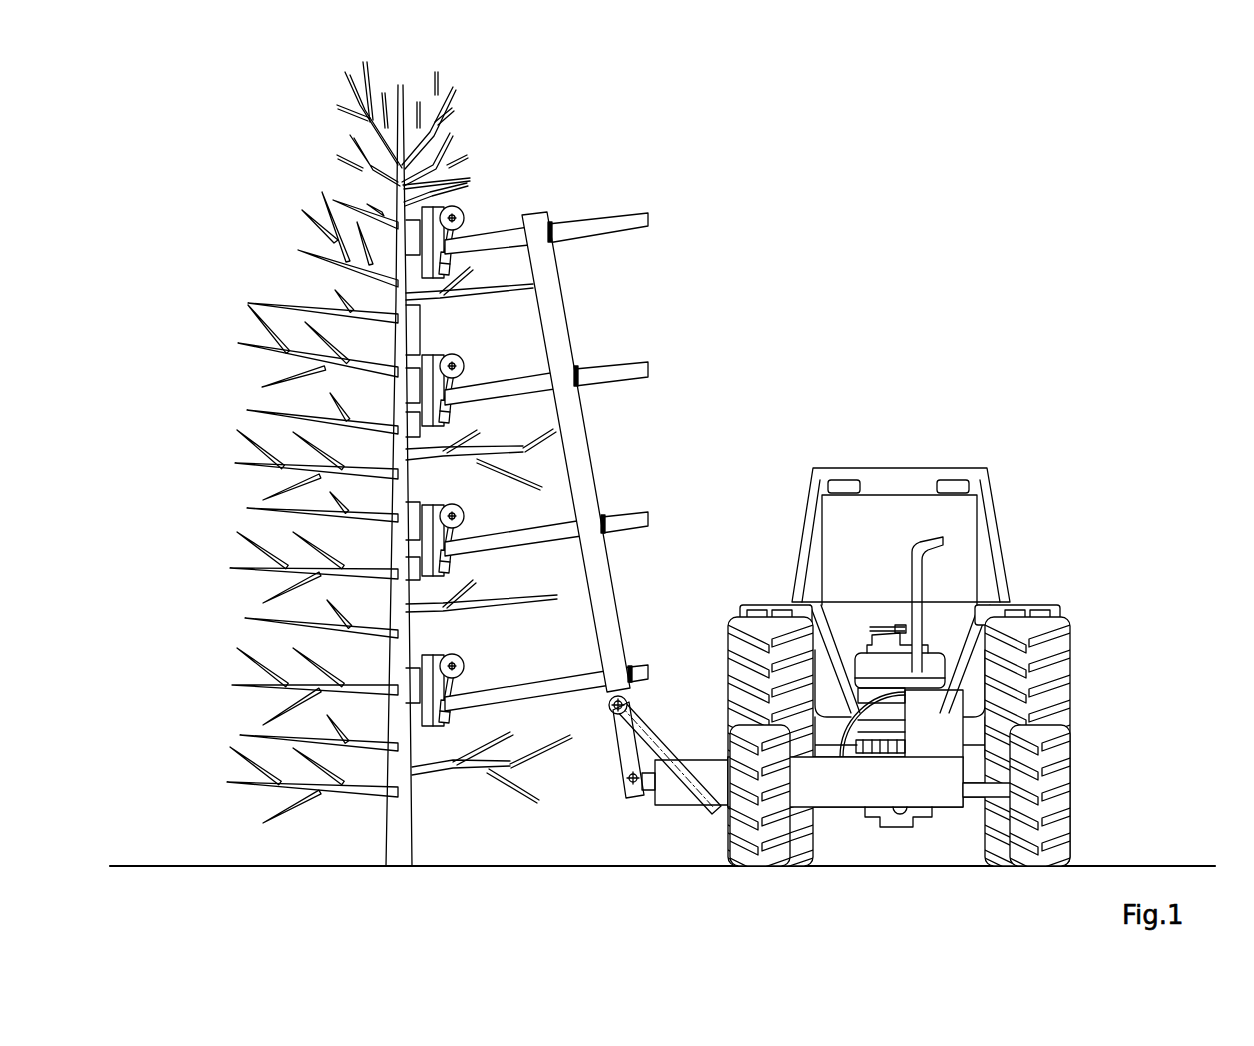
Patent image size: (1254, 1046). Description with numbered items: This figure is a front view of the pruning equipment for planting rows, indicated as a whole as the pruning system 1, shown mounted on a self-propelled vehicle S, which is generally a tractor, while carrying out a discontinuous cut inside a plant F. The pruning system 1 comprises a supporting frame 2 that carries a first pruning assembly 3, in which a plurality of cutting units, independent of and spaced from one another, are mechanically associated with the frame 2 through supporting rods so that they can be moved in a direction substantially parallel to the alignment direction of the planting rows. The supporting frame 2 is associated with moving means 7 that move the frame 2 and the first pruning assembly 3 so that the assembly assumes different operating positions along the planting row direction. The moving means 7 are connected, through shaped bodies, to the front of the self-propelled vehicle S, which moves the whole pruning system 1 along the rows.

The pruning system 1 is at (733, 270).
The supporting frame 2 is at (620, 776).
The first pruning assembly 3 is at (497, 207).
The moving means 7 is at (708, 742).
The tree F is at (283, 227).
The self-propelled vehicle S is at (1050, 542).